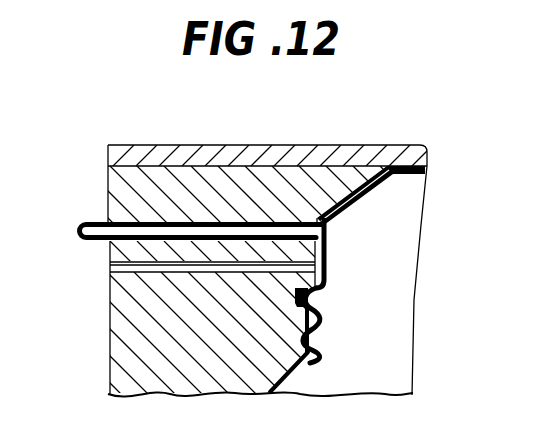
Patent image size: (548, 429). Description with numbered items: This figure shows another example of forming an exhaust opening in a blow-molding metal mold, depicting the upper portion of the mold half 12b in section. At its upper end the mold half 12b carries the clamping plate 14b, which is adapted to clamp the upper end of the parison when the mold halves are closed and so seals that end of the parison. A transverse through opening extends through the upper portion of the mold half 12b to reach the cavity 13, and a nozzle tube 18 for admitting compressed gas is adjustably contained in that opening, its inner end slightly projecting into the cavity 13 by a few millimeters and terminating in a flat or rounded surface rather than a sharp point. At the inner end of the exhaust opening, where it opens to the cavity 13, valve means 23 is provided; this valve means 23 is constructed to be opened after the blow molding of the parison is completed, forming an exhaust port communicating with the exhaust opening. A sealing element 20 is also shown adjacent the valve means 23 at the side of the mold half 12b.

The clamping plate 14b is at (190, 145).
The nozzle tube 18 is at (153, 228).
The cavity 13 is at (332, 278).
The valve means 23 is at (325, 269).
The sealing strip 20 is at (313, 345).
The mold half 12b is at (130, 367).